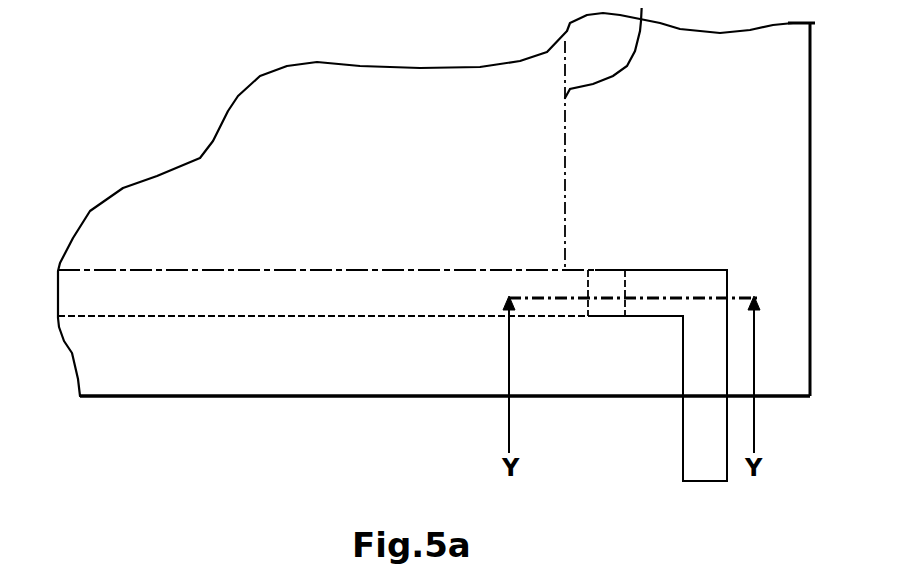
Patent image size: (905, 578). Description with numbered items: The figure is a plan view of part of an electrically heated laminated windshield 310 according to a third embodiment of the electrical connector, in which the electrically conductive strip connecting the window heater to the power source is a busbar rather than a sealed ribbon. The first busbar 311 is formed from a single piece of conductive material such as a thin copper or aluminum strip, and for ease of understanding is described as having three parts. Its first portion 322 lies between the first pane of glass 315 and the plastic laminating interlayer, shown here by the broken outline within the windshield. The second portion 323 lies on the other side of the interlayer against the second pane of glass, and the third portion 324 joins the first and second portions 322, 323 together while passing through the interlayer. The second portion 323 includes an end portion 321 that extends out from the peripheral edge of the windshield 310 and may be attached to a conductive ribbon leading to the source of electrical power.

The electrically heated laminated windshield 310 is at (278, 397).
The first busbar 311 is at (193, 268).
The first pane of glass 315 is at (347, 397).
The end portion 321 is at (683, 450).
The first portion 322 is at (290, 317).
The second portion 323 is at (727, 268).
The third portion 324 is at (605, 268).